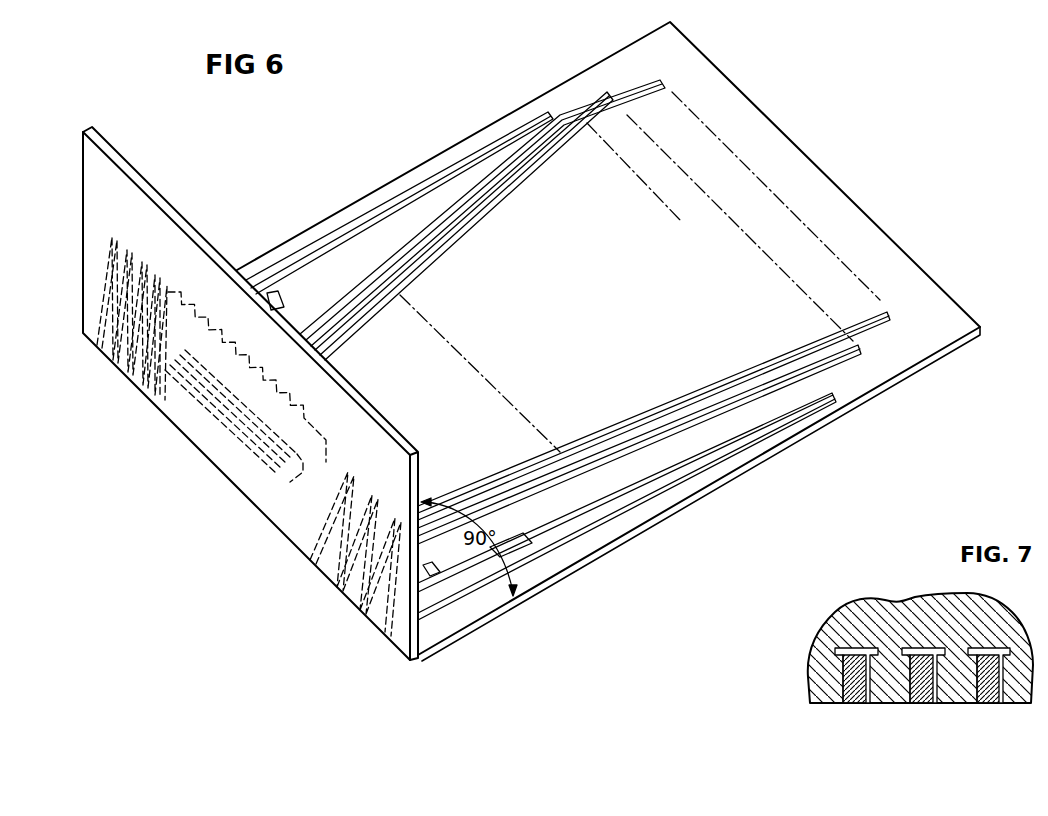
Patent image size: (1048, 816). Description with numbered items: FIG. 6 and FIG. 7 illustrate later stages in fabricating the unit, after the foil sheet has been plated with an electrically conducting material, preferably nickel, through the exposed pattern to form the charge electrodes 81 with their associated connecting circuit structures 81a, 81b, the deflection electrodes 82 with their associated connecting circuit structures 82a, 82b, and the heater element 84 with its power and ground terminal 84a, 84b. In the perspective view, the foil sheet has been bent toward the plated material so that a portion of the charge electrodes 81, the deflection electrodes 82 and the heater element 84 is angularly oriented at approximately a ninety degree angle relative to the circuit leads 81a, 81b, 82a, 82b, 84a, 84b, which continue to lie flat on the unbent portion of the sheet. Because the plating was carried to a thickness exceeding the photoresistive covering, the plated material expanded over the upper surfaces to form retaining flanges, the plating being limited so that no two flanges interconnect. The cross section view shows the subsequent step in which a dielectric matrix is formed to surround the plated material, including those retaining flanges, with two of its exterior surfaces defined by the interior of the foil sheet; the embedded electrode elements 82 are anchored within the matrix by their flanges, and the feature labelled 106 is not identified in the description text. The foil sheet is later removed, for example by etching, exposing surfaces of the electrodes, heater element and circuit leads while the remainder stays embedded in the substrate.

In FIG. 6, the charge electrodes 81 is at (180, 442).
In FIG. 6, the deflection electrodes 82 is at (130, 392).
In FIG. 7, the deflection electrodes 82 is at (988, 704).
In FIG. 6, the heater element 84 is at (344, 596).
In FIG. 6, the connecting circuit structure 81a is at (546, 172).
In FIG. 6, the connecting circuit structure 81b is at (660, 97).
In FIG. 6, the connecting circuit structure 82a is at (486, 178).
In FIG. 6, the connecting circuit structure 82b is at (588, 99).
In FIG. 6, the power terminal 84a is at (408, 190).
In FIG. 6, the ground terminal 84b is at (752, 447).
In FIG. 7, the grooves 106 is at (980, 648).